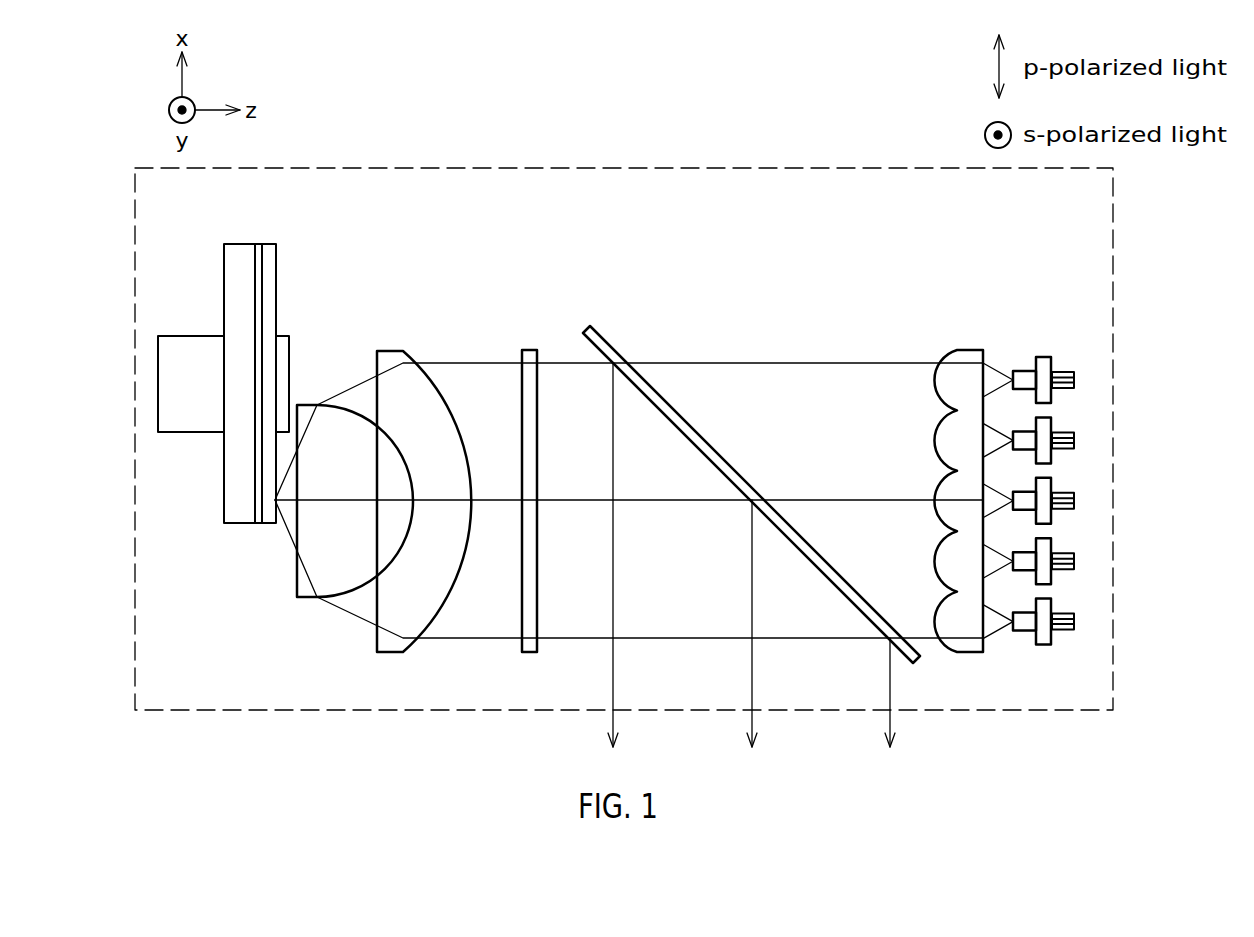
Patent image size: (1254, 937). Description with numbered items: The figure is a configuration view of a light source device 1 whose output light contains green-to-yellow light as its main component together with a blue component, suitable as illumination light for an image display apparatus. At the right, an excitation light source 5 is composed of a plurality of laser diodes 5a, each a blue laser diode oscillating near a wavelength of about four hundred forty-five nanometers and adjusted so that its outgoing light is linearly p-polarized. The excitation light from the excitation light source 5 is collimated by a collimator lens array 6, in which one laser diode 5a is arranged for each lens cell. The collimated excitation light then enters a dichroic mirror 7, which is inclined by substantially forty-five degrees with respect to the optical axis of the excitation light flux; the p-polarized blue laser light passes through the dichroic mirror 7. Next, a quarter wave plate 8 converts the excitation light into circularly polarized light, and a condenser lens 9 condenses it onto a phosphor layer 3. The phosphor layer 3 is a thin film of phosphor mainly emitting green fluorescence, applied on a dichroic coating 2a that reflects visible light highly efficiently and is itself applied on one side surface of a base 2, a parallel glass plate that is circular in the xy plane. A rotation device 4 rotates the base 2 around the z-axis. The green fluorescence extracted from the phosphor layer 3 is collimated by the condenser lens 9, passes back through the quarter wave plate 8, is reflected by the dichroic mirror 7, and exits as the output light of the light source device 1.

The light source device 1 is at (843, 166).
The base 2 is at (236, 243).
The dichroic coating 2a is at (258, 243).
The phosphor layer 3 is at (269, 243).
The rotation device 4 is at (193, 335).
The excitation light source 5 is at (1042, 356).
The laser diode 5a is at (1052, 364).
The collimator lens array 6 is at (969, 350).
The dichroic mirror 7 is at (608, 344).
The quarter wave plate 8 is at (529, 350).
The condenser lens 9 is at (303, 405).